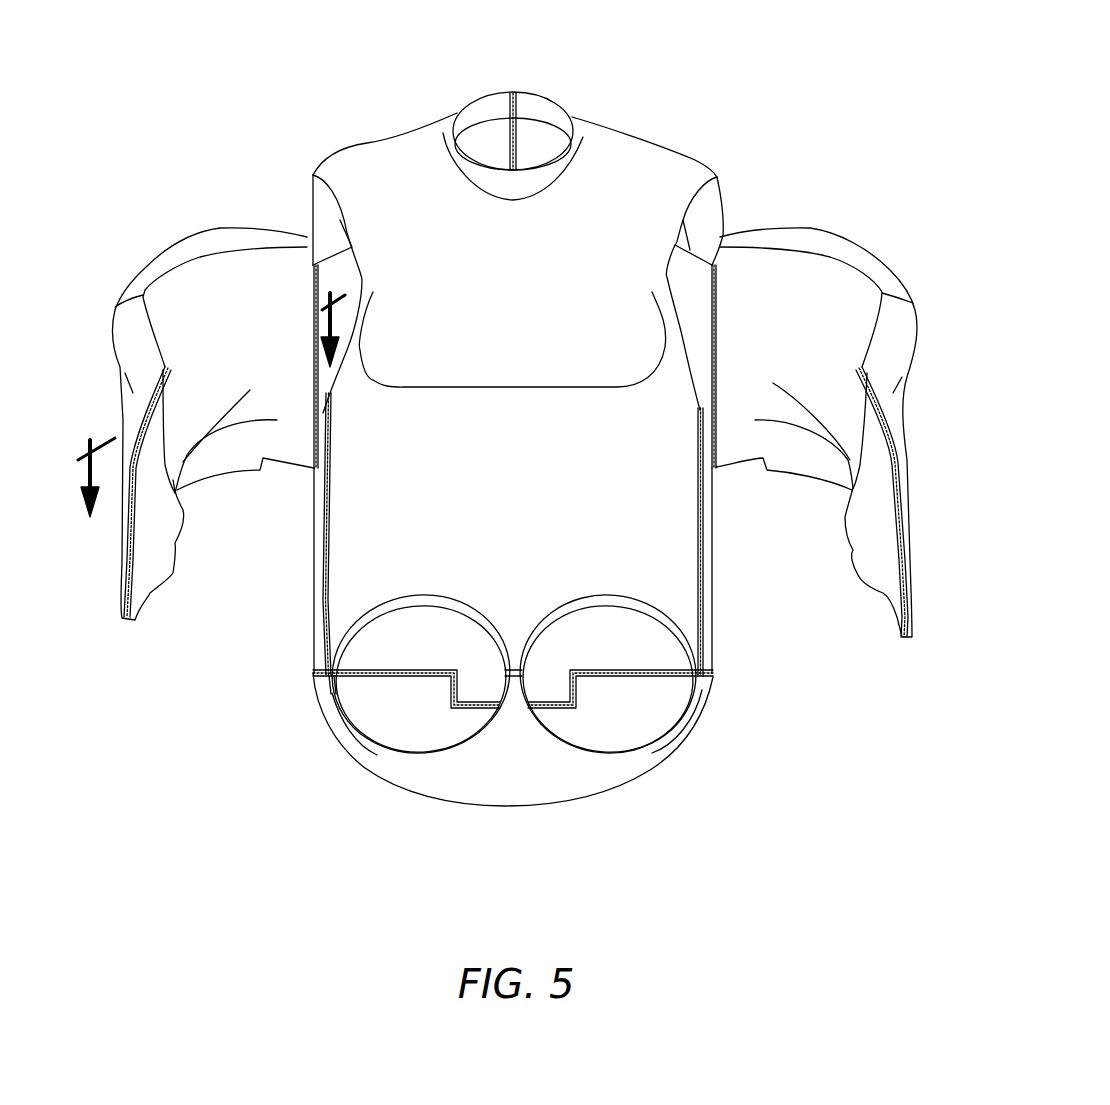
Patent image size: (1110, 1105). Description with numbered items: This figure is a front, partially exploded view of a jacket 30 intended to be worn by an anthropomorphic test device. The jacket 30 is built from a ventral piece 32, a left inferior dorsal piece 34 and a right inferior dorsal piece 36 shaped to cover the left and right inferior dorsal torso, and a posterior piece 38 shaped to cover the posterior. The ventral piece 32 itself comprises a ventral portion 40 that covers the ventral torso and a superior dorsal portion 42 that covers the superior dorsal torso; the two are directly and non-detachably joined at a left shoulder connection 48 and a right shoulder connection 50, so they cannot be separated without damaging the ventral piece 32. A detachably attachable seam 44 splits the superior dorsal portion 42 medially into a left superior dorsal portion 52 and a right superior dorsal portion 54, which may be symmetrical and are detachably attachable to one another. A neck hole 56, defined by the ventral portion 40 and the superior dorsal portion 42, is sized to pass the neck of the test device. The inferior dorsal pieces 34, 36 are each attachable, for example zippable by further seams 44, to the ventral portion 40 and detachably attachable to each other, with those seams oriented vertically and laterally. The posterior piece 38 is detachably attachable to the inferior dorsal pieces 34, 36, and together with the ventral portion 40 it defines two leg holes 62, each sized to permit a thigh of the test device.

The jacket 30 is at (728, 52).
The ventral piece 32 is at (673, 141).
The left inferior dorsal piece 34 is at (912, 330).
The right inferior dorsal piece 36 is at (116, 330).
The posterior piece 38 is at (617, 790).
The ventral portion 40 is at (323, 573).
The superior dorsal portion 42 is at (306, 192).
The detachably attachable seam 44 is at (503, 128).
The left shoulder connection 48 is at (622, 133).
The right shoulder connection 50 is at (366, 143).
The left superior dorsal portion 52 is at (725, 222).
The right superior dorsal portion 54 is at (306, 222).
The neck hole 56 is at (567, 116).
The leg holes 62 is at (482, 735).